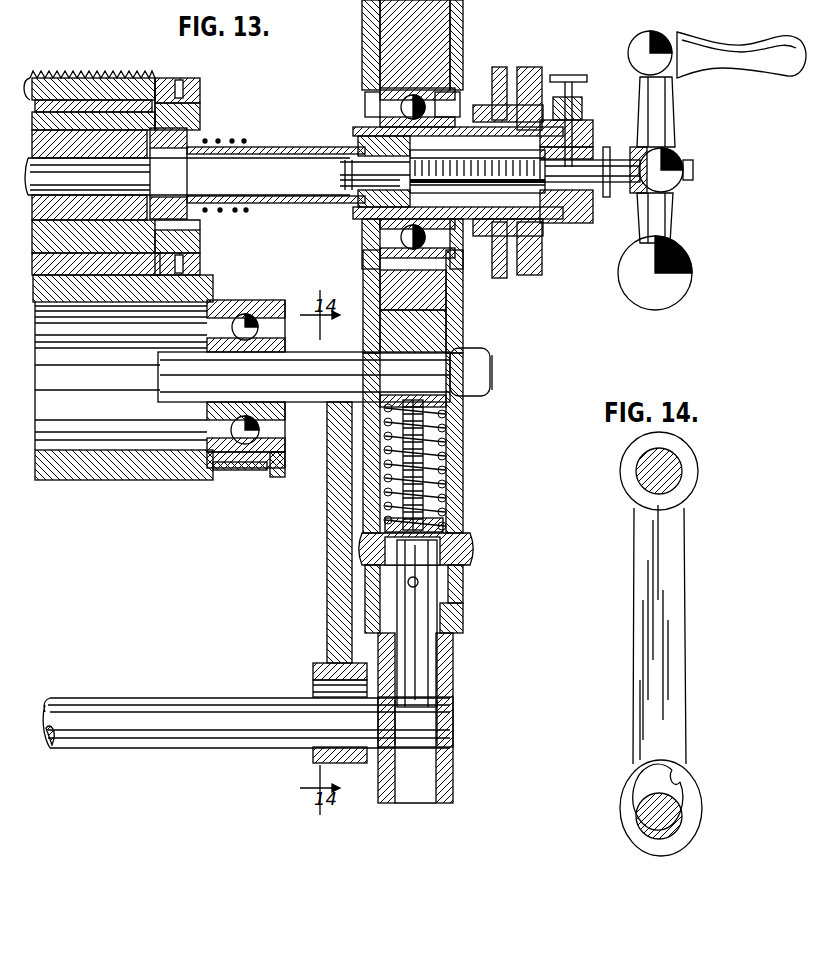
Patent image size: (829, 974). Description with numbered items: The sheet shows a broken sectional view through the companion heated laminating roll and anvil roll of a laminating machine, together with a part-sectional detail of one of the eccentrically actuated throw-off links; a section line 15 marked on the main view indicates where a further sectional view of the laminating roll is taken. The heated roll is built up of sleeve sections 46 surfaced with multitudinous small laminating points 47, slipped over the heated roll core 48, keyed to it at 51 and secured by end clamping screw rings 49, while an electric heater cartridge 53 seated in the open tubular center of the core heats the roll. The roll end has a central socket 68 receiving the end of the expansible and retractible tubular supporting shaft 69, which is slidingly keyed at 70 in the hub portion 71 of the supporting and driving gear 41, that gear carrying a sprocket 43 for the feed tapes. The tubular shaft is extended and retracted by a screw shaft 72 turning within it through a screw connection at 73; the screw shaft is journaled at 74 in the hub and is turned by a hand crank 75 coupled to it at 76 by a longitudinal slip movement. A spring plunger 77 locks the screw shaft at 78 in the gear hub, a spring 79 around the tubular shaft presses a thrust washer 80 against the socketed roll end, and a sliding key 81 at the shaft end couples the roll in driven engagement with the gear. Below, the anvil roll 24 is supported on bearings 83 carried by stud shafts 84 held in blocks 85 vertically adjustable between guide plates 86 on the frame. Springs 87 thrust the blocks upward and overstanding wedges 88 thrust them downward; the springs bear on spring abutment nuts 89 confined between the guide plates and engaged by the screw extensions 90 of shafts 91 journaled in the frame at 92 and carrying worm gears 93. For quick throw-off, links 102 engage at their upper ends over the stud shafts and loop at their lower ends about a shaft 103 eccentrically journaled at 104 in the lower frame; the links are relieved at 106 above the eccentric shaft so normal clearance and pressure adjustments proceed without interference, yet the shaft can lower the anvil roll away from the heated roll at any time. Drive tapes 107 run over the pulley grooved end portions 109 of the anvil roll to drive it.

In FIG. 13, the section line 15 is at (62, 52).
In FIG. 13, the anvil roll 24 is at (172, 468).
In FIG. 13, the supporting and driving gear 41 is at (540, 70).
In FIG. 13, the sprocket 43 is at (498, 70).
In FIG. 13, the sleeve sections 46 is at (153, 82).
In FIG. 13, the laminating points 47 is at (120, 76).
In FIG. 13, the heated roll core 48 is at (118, 122).
In FIG. 13, the end clamping screw rings 49 is at (198, 84).
In FIG. 13, the key 51 is at (37, 74).
In FIG. 13, the electric heater cartridge 53 is at (187, 176).
In FIG. 13, the central socket 68 is at (200, 130).
In FIG. 13, the tubular supporting shaft 69 is at (282, 140).
In FIG. 13, the sliding key 70 is at (362, 138).
In FIG. 13, the hub portion 71 is at (365, 208).
In FIG. 13, the screw shaft 72 is at (345, 168).
In FIG. 13, the screw connection 73 is at (345, 184).
In FIG. 13, the journal 74 is at (593, 138).
In FIG. 13, the hand crank 75 is at (710, 72).
In FIG. 13, the coupling 76 is at (607, 195).
In FIG. 13, the spring plunger 77 is at (578, 80).
In FIG. 13, the locking location 78 is at (590, 170).
In FIG. 13, the spring 79 is at (240, 213).
In FIG. 13, the thrust washer 80 is at (200, 218).
In FIG. 13, the sliding key 81 is at (172, 150).
In FIG. 13, the bearings 83 is at (210, 342).
In FIG. 13, the stud shafts 84 is at (160, 388).
In FIG. 14, the stud shafts 84 is at (676, 472).
In FIG. 13, the blocks 85 is at (445, 326).
In FIG. 13, the guide plates 86 is at (372, 328).
In FIG. 13, the springs 87 is at (438, 488).
In FIG. 13, the wedges 88 is at (445, 292).
In FIG. 13, the spring abutment nuts 89 is at (440, 520).
In FIG. 13, the screw extensions 90 is at (440, 462).
In FIG. 13, the shafts 91 is at (420, 652).
In FIG. 13, the journal 92 is at (440, 682).
In FIG. 13, the worm gears 93 is at (470, 550).
In FIG. 14, the throw-off links 102 is at (646, 646).
In FIG. 13, the eccentric shaft 103 is at (236, 738).
In FIG. 14, the eccentric shaft 103 is at (650, 812).
In FIG. 13, the eccentric journal 104 is at (422, 746).
In FIG. 13, the relief 106 is at (313, 692).
In FIG. 14, the relief 106 is at (678, 787).
In FIG. 13, the drive tapes 107 is at (246, 468).
In FIG. 13, the pulley grooved end portions 109 is at (275, 470).